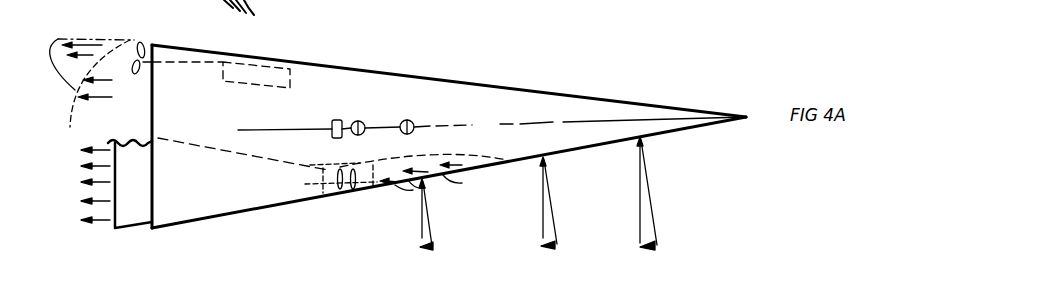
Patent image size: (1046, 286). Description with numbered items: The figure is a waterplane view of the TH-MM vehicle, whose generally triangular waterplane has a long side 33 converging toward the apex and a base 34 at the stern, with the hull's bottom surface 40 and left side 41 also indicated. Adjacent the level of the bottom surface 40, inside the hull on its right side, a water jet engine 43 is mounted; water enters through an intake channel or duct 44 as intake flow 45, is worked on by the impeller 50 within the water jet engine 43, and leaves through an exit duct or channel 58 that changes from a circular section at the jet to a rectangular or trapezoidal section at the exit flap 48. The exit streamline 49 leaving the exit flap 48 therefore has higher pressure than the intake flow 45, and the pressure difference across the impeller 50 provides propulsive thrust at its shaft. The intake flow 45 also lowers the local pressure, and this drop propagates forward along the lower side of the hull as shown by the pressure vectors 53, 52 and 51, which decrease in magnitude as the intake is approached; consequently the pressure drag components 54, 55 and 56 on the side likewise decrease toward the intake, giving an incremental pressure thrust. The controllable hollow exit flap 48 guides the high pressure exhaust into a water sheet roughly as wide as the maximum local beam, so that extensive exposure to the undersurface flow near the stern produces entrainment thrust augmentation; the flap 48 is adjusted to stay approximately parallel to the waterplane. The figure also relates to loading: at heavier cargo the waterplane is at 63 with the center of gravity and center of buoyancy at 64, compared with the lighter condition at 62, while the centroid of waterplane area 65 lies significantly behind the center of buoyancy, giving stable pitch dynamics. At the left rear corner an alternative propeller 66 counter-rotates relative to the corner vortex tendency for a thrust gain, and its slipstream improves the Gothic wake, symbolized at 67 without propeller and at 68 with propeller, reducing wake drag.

The side 33 is at (652, 142).
The base 34 is at (150, 115).
The bottom surface 40 is at (457, 126).
The left side 41 is at (558, 92).
The water jet engine 43 is at (351, 192).
The intake channel or duct 44 is at (457, 156).
The intake flow 45 is at (470, 173).
The exit flap 48 is at (135, 228).
The exit streamline 49 is at (100, 224).
The impeller 50 is at (337, 192).
The pressure vector 51 is at (432, 228).
The pressure vector 52 is at (557, 224).
The pressure vector 53 is at (657, 218).
The pressure drag component 54 is at (653, 247).
The pressure drag component 55 is at (552, 247).
The pressure drag component 56 is at (434, 249).
The exit duct or channel 58 is at (249, 155).
The center of gravity and center of buoyancy 62 is at (356, 120).
The waterplane 63 is at (785, 278).
The center of gravity and center of buoyancy 64 is at (408, 120).
The waterplane area centroid 65 is at (332, 120).
The left propeller 66 is at (141, 42).
The Gothic wake 67 is at (70, 105).
The improved Gothic wake 68 is at (88, 38).